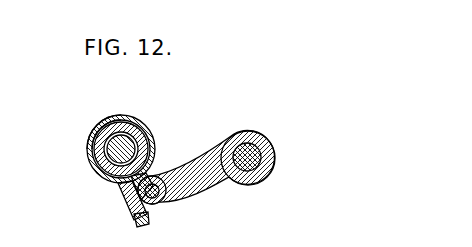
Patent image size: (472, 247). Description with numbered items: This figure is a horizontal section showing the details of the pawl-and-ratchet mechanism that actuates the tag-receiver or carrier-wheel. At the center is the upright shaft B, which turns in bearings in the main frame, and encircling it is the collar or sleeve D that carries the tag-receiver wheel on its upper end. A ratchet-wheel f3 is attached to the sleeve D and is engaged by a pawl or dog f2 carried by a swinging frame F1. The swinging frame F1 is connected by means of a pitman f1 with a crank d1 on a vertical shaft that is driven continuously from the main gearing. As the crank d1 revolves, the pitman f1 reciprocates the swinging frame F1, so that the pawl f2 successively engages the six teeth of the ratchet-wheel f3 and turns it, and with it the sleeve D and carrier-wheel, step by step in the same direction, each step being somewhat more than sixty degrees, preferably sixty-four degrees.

The ratchet-wheel f3 is at (117, 117).
The collar or sleeve D is at (100, 138).
The upright shaft B is at (100, 169).
The swinging frame F1 is at (118, 195).
The pawl or dog f2 is at (123, 208).
The crank d1 is at (228, 142).
The pitman f1 is at (193, 197).